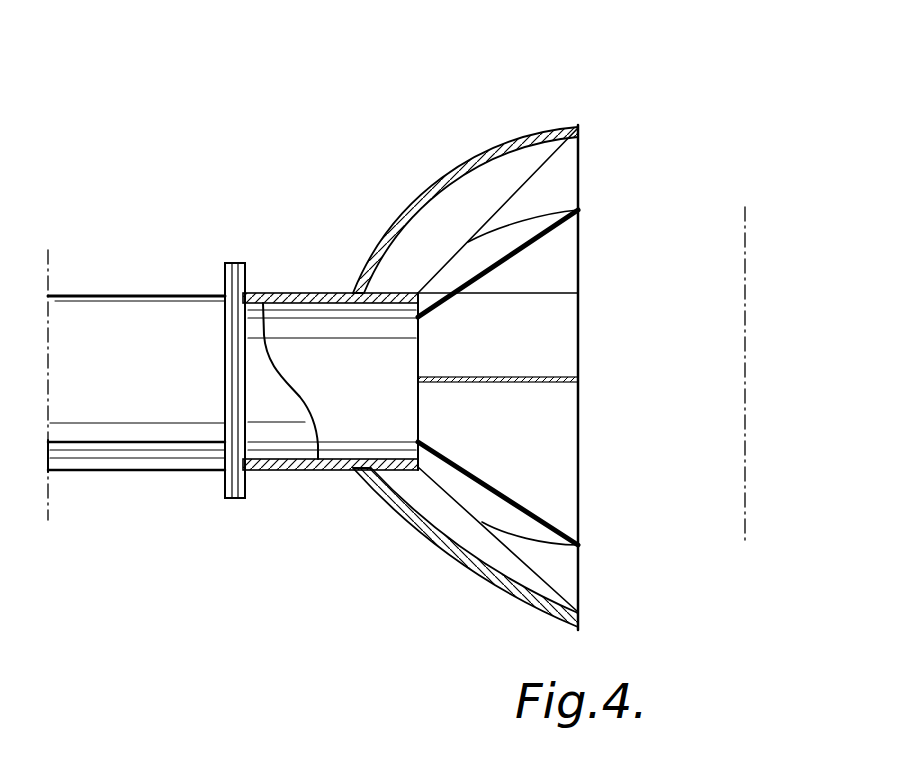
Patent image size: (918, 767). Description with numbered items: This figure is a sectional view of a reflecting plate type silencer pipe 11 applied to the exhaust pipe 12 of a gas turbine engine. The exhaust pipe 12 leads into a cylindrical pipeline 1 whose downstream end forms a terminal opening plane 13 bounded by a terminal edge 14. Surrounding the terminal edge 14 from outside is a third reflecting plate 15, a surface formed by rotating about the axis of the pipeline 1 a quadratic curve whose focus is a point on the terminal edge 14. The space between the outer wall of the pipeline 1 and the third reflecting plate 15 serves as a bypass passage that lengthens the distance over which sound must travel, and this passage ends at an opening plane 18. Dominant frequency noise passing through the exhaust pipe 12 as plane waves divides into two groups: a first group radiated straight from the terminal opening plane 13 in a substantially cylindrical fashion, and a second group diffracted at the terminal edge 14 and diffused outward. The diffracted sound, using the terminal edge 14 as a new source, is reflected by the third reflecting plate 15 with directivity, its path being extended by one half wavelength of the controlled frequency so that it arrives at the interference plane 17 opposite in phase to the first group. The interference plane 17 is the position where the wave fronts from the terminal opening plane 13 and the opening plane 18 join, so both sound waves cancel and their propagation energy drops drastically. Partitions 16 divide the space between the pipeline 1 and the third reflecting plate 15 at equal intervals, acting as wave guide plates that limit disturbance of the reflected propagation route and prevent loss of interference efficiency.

The pipeline 1 is at (305, 322).
The reflecting plate type silencer pipe 11 is at (363, 152).
The exhaust pipe 12 is at (122, 293).
The terminal opening plane 13 is at (418, 440).
The terminal edge 14 is at (578, 297).
The third reflecting plate 15 is at (452, 188).
The partition 16 is at (547, 167).
The interference plane 17 is at (765, 532).
The opening plane 18 is at (545, 348).